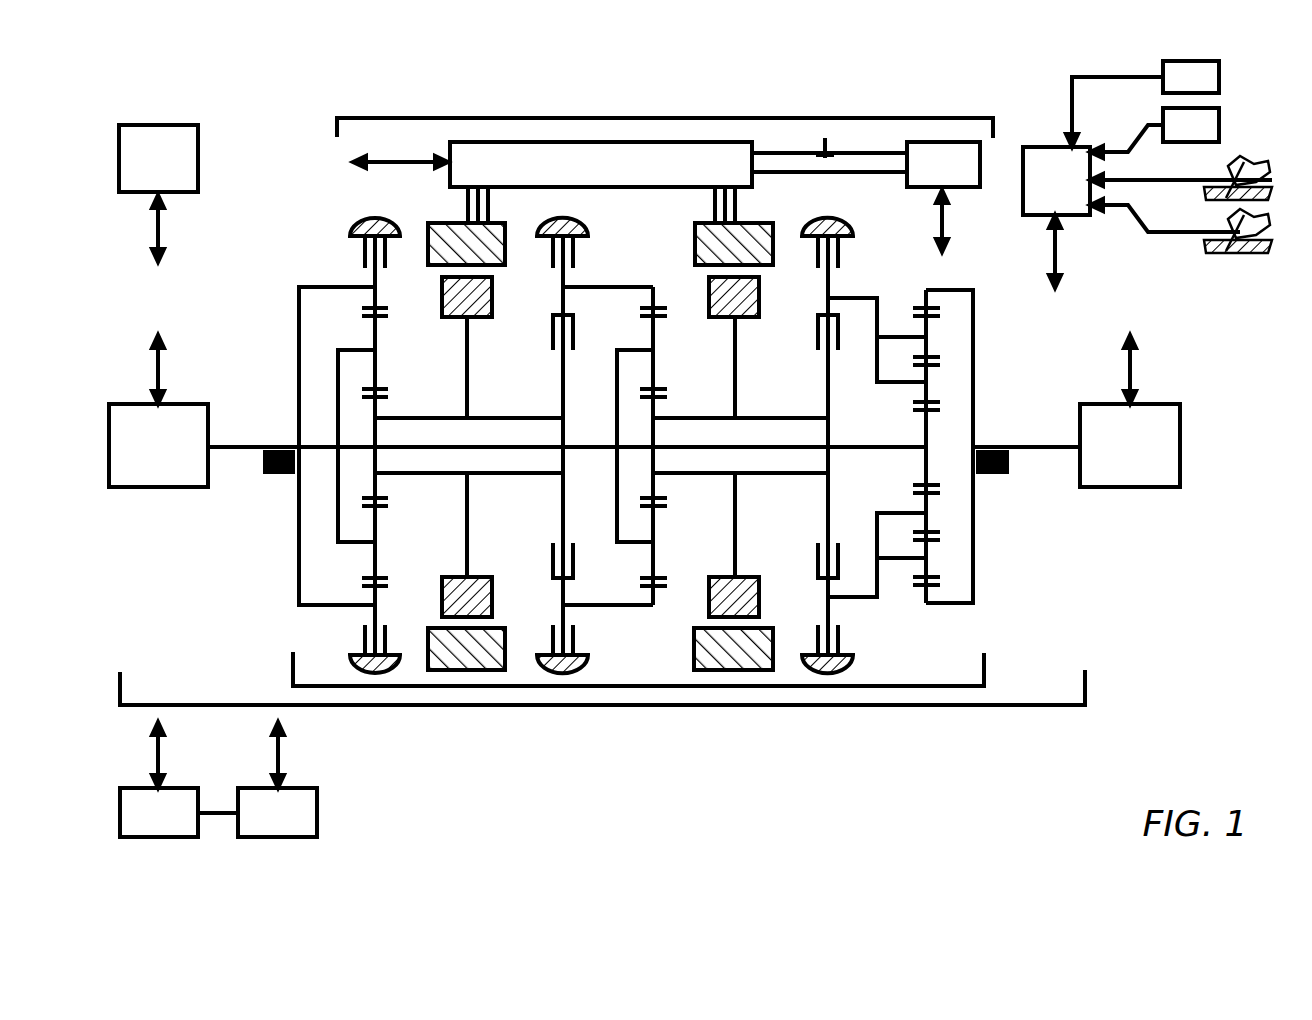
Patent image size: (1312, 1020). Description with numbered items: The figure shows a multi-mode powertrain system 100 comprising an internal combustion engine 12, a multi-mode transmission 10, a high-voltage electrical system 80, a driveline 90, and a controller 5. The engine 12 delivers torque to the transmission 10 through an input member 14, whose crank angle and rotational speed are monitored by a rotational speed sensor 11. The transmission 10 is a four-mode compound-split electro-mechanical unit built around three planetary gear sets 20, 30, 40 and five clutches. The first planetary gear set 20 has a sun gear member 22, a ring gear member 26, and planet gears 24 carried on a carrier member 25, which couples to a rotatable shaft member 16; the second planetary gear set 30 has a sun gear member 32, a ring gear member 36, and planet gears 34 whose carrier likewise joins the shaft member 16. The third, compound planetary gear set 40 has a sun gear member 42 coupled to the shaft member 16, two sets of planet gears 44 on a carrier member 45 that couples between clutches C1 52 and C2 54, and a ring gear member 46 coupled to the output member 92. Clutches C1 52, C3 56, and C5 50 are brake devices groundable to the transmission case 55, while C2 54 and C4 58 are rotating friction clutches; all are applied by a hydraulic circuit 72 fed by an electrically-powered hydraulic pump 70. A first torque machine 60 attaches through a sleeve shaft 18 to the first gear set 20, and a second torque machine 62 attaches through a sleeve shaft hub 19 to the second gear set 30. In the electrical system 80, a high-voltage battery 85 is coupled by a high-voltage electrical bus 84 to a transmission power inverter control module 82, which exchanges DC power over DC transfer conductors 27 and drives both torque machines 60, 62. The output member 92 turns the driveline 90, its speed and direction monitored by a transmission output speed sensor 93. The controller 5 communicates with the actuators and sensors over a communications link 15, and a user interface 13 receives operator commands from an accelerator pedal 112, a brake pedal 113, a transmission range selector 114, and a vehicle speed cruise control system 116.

The controller 5 is at (158, 158).
The multi-mode transmission 10 is at (767, 686).
The rotational speed sensor 11 is at (278, 472).
The internal combustion engine 12 is at (158, 445).
The user interface 13 is at (1056, 181).
The input member 14 is at (245, 448).
The communications link 15 is at (632, 463).
The rotatable shaft member 16 is at (572, 447).
The sleeve shaft 18 is at (505, 418).
The sleeve shaft hub 19 is at (778, 418).
The planetary gear set 20 is at (392, 489).
The sun gear member 22 is at (378, 398).
The planet gears 24 is at (378, 350).
The carrier member 25 is at (340, 418).
The ring gear member 26 is at (378, 307).
The DC transfer conductors 27 is at (490, 205).
The planetary gear set 30 is at (664, 541).
The sun gear member 32 is at (658, 398).
The planet gears 34 is at (655, 350).
The ring gear member 36 is at (655, 307).
The planetary gear set 40 is at (906, 431).
The sun gear member 42 is at (930, 485).
The planet gears 44 is at (930, 513).
The carrier member 45 is at (880, 298).
The ring gear member 46 is at (925, 590).
The clutch C5 50 is at (367, 262).
The clutch C1 52 is at (840, 262).
The clutch C2 54 is at (814, 340).
The transmission case 55 is at (365, 222).
The clutch C3 56 is at (576, 262).
The clutch C4 58 is at (548, 340).
The first torque machine 60 is at (490, 270).
The second torque machine 62 is at (755, 270).
The electrically-powered hydraulic pump 70 is at (179, 812).
The hydraulic circuit 72 is at (277, 812).
The high-voltage electrical system 80 is at (672, 118).
The transmission power inverter control module 82 is at (601, 164).
The high-voltage electrical bus 84 is at (860, 153).
The high-voltage battery 85 is at (866, 164).
The driveline 90 is at (1130, 445).
The output member 92 is at (1030, 447).
The transmission output speed sensor 93 is at (1007, 462).
The powertrain system 100 is at (672, 705).
The accelerator pedal 112 is at (1225, 240).
The operator brake pedal 113 is at (1225, 187).
The transmission range selector 114 is at (1154, 133).
The vehicle speed cruise control system 116 is at (1142, 104).